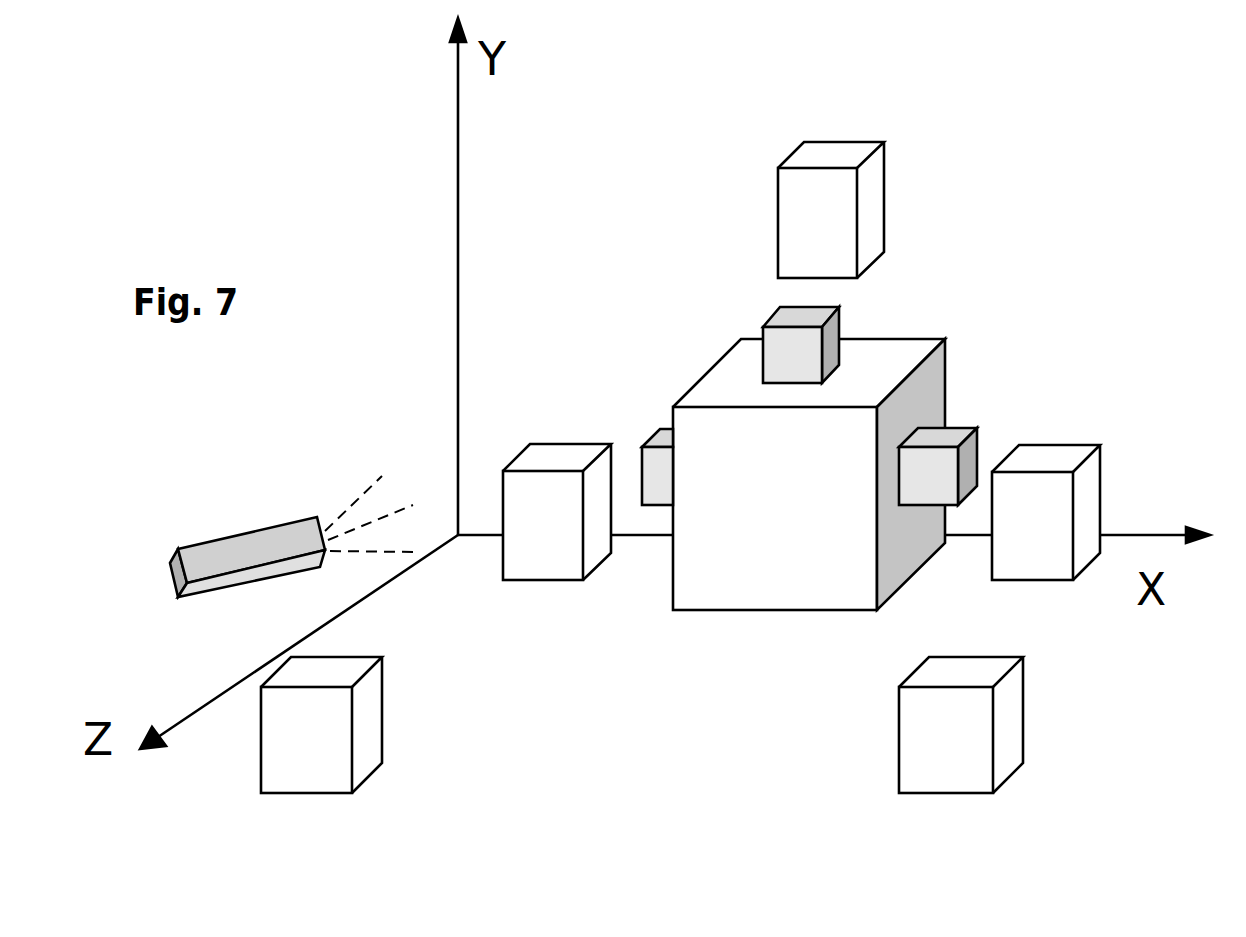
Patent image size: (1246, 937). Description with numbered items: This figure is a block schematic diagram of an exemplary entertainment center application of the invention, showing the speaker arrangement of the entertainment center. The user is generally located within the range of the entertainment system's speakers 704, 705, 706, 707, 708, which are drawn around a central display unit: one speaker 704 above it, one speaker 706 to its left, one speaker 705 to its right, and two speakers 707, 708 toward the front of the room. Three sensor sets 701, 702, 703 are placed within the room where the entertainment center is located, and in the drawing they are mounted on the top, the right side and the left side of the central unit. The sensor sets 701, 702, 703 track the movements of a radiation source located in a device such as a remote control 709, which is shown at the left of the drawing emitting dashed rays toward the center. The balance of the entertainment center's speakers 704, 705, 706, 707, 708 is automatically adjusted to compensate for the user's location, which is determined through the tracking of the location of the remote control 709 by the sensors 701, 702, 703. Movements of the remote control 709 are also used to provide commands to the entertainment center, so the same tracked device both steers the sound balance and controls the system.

The sensor set 701 is at (747, 350).
The sensor set 702 is at (977, 442).
The sensor set 703 is at (642, 445).
The speaker 704 is at (793, 156).
The speaker 705 is at (1102, 487).
The speaker 706 is at (503, 488).
The speaker 707 is at (290, 793).
The speaker 708 is at (945, 794).
The remote control 709 is at (197, 533).